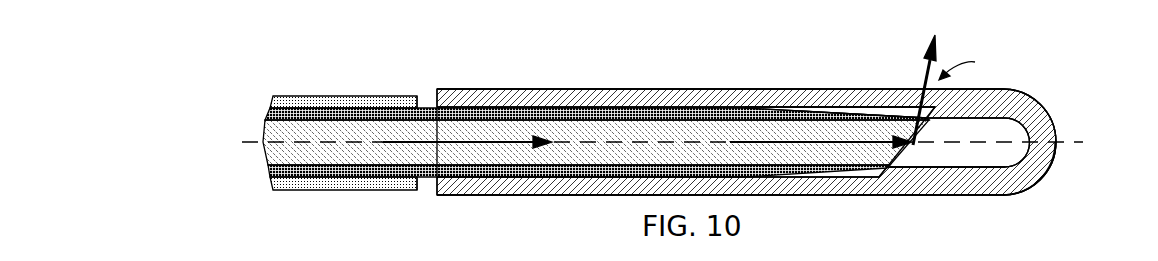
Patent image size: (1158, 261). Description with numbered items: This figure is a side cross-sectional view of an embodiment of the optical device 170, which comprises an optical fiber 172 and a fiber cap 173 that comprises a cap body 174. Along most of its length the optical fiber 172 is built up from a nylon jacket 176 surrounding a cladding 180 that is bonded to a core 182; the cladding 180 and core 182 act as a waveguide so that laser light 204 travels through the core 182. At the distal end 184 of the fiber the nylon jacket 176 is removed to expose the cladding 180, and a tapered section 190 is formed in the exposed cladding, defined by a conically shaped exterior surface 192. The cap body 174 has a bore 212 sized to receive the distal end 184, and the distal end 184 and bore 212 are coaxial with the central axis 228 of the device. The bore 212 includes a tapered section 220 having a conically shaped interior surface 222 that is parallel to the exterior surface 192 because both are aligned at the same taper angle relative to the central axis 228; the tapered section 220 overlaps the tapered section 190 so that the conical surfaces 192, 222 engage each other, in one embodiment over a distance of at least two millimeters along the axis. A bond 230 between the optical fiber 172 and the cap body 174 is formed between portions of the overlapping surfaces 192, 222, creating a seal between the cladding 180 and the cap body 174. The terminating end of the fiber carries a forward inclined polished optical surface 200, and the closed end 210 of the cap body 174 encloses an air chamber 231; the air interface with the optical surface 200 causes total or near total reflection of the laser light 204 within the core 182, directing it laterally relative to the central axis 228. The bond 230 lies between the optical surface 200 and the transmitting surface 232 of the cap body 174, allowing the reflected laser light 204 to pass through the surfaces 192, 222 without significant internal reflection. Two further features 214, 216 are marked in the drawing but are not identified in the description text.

The optical device 170 is at (1046, 68).
The optical fiber 172 is at (368, 96).
The fiber cap 173 is at (1000, 196).
The cap body 174 is at (1029, 190).
The nylon jacket 176 is at (307, 96).
The cladding 180 is at (353, 166).
The core 182 is at (300, 157).
The distal end 184 is at (427, 108).
The tapered section 190 is at (803, 112).
The conically shaped exterior surface 192 is at (836, 115).
The forward inclined polished optical surface 200 is at (930, 140).
The laser light 204 is at (517, 140).
The closed end 210 is at (1050, 165).
The bore 212 is at (556, 107).
The gap 214 is at (430, 185).
The lower wall of sleeve 216 is at (464, 195).
The tapered section of the bore 220 is at (895, 175).
The conically shaped interior surface 222 is at (921, 167).
The central axis 228 is at (252, 143).
The bond 230 is at (793, 109).
The air chamber 231 is at (1015, 130).
The transmitting surface 232 is at (974, 66).